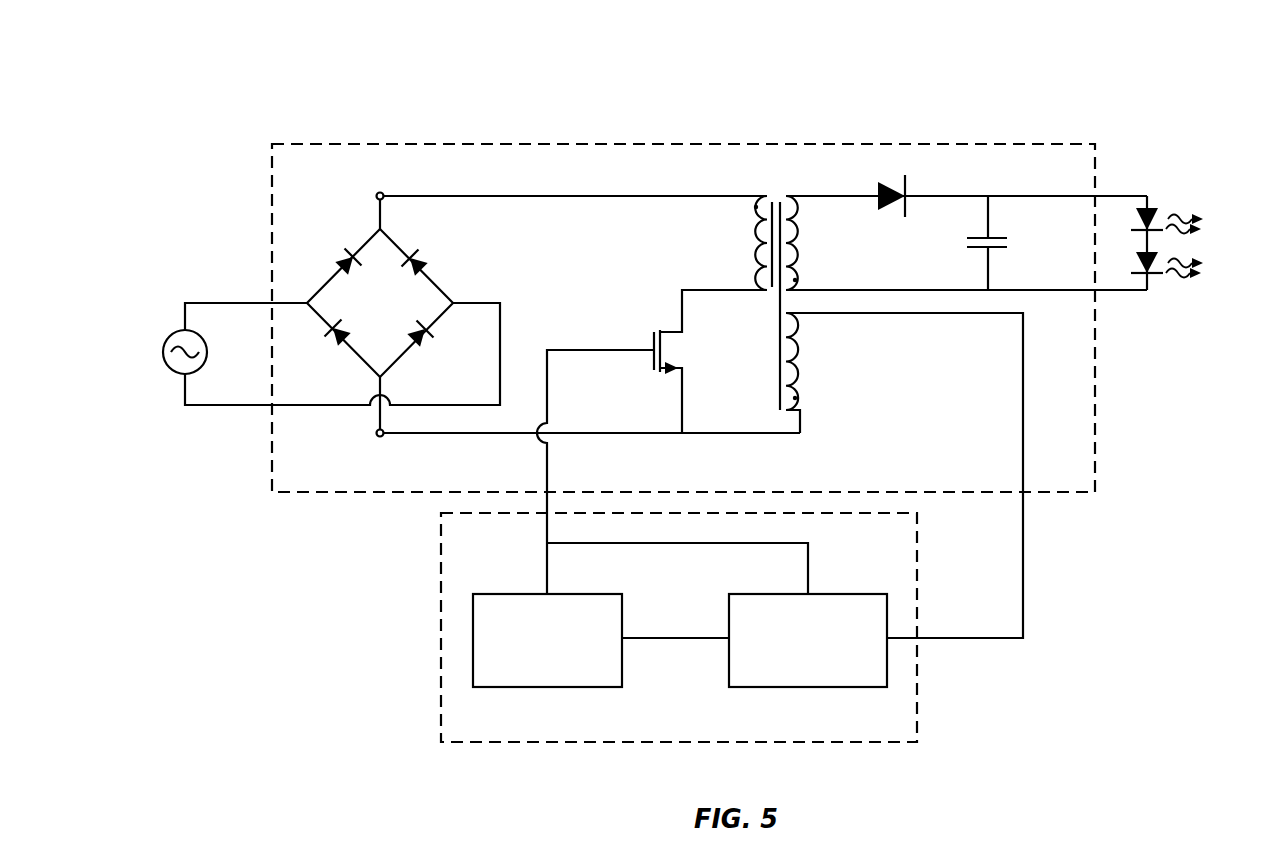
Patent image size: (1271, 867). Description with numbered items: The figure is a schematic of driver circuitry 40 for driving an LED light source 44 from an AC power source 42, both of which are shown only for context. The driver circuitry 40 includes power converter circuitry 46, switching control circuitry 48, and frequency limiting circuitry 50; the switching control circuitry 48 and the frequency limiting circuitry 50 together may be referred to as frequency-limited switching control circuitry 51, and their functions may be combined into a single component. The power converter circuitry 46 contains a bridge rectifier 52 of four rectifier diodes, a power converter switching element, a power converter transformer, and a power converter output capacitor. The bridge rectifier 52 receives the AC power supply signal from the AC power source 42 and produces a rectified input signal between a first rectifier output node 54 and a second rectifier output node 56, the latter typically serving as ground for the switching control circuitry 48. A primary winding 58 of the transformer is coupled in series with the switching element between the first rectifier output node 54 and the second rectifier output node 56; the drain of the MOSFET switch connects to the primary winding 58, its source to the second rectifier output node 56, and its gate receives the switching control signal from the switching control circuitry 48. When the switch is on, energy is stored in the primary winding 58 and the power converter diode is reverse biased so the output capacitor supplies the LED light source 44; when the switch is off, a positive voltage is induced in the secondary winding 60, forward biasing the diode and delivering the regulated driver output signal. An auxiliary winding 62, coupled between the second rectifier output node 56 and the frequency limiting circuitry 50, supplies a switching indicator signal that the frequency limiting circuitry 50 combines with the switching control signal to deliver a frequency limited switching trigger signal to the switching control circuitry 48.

The driver circuitry 40 is at (681, 84).
The AC power source 42 is at (168, 345).
The LED light source 44 is at (1197, 187).
The power converter circuitry 46 is at (1088, 479).
The switching control circuitry 48 is at (520, 688).
The frequency limiting circuitry 50 is at (790, 688).
The frequency-limited switching control circuitry 51 is at (918, 713).
The bridge rectifier 52 is at (357, 208).
The first rectifier output node 54 is at (382, 191).
The second rectifier output node 56 is at (380, 438).
The primary winding 58 is at (743, 243).
The secondary winding 60 is at (811, 243).
The auxiliary winding 62 is at (811, 373).